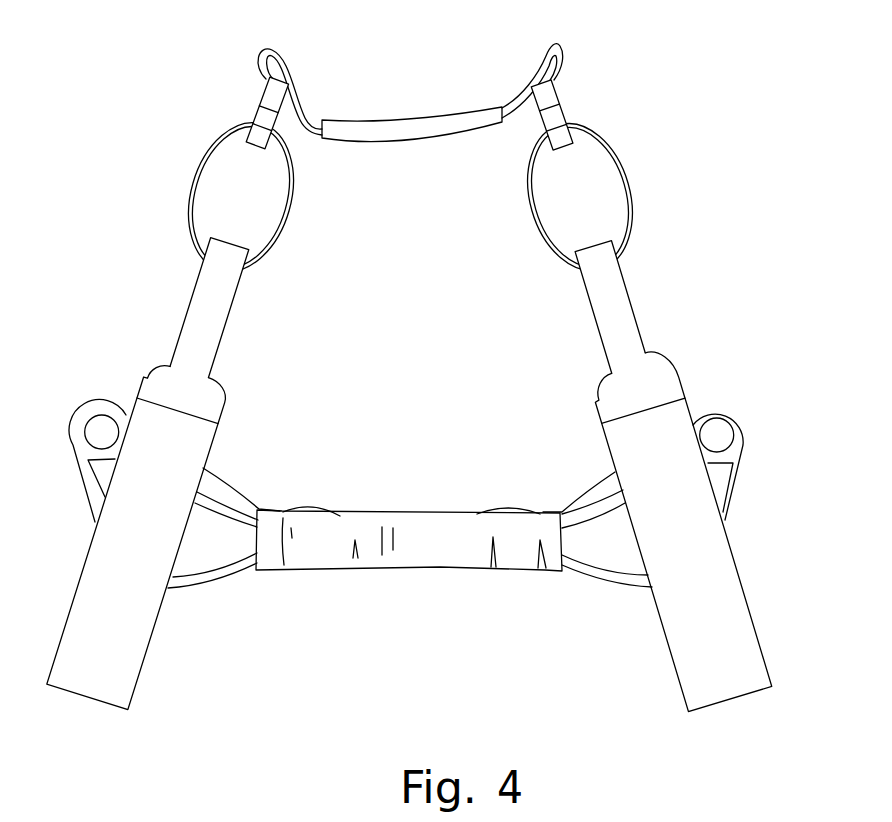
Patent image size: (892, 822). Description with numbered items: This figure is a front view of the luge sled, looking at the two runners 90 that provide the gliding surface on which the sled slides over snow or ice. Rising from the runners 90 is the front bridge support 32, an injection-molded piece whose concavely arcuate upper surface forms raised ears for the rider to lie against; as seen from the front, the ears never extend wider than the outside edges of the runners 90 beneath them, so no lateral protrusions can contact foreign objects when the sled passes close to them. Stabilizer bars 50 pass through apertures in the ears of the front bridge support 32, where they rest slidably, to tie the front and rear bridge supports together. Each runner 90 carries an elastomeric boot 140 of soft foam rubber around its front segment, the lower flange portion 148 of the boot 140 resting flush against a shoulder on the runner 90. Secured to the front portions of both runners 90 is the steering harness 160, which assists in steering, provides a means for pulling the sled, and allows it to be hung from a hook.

The steering harness 160 is at (610, 107).
The elastomeric boot 140 is at (640, 330).
The lower flange portion 148 is at (683, 380).
The stabilizer bars 50 is at (88, 434).
The front bridge support 32 is at (733, 492).
The runners 90 is at (760, 644).